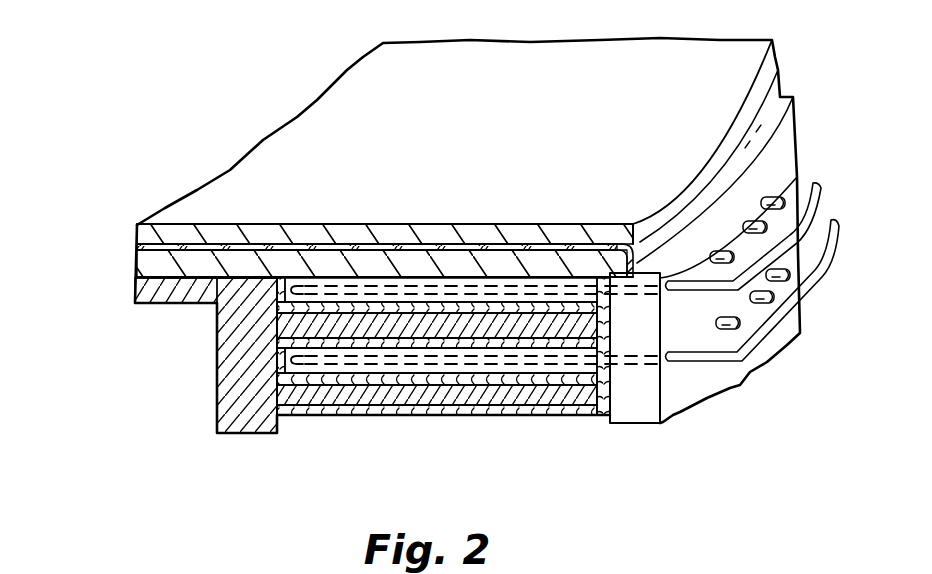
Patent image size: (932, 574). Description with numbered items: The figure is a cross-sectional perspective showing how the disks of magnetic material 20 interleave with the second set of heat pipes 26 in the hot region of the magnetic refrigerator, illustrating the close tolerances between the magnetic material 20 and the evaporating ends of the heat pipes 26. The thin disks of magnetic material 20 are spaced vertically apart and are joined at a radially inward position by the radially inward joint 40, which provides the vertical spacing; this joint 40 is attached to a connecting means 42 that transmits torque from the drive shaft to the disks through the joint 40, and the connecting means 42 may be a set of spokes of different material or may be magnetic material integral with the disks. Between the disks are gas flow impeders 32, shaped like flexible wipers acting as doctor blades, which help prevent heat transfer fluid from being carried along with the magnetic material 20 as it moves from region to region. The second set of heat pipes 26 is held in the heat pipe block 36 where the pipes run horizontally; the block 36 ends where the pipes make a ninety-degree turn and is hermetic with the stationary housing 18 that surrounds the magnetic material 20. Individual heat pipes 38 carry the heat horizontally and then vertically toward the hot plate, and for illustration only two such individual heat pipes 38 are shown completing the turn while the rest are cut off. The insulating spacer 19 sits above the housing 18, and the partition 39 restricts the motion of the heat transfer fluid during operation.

The stationary housing 18 is at (233, 247).
The insulating spacer 19 is at (133, 232).
The partition 39 is at (135, 257).
The connecting means 42 is at (135, 292).
The radially inward joint 40 is at (232, 377).
The magnetic material 20 is at (293, 417).
The second set of heat pipes 26 is at (413, 358).
The gas flow impeders 32 is at (530, 410).
The heat pipe block 36 is at (637, 407).
The individual heat pipes 38 is at (820, 266).